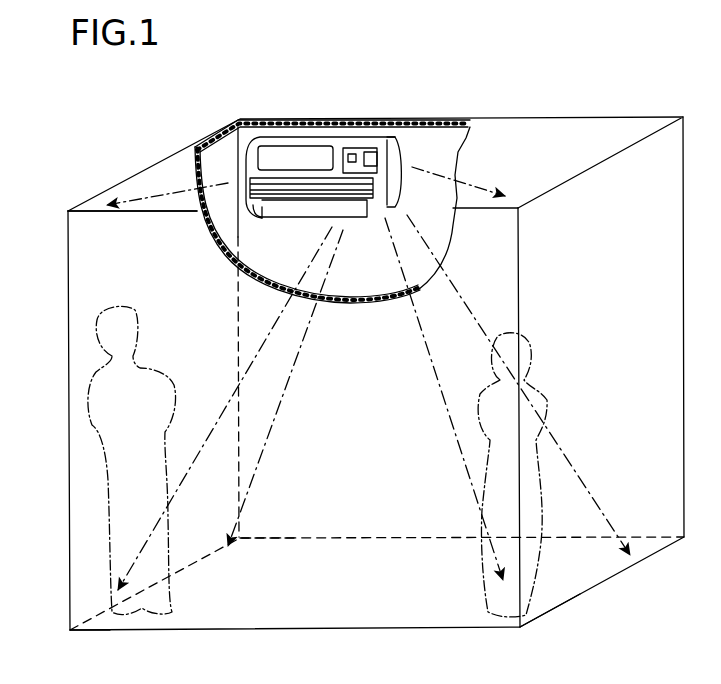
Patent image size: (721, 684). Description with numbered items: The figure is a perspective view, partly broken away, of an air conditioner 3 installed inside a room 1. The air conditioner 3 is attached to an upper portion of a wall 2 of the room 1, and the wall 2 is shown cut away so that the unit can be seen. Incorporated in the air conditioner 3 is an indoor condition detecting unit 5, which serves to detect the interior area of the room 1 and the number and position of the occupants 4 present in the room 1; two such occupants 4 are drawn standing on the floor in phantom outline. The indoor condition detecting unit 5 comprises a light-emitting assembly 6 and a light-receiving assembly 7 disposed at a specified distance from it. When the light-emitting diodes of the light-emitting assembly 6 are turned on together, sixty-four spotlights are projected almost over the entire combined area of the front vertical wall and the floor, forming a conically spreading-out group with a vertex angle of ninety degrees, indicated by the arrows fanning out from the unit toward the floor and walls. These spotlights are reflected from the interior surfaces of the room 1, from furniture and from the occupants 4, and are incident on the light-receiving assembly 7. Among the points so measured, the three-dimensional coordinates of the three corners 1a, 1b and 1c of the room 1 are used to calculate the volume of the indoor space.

The room 1 is at (551, 140).
The corner 1a is at (80, 209).
The corner 1b is at (68, 632).
The corner 1c is at (242, 538).
The wall 2 is at (433, 146).
The air conditioner 3 is at (279, 156).
The occupants 4 is at (90, 408).
The indoor condition detecting unit 5 is at (348, 150).
The light-emitting assembly 6 is at (377, 150).
The light-receiving assembly 7 is at (358, 150).